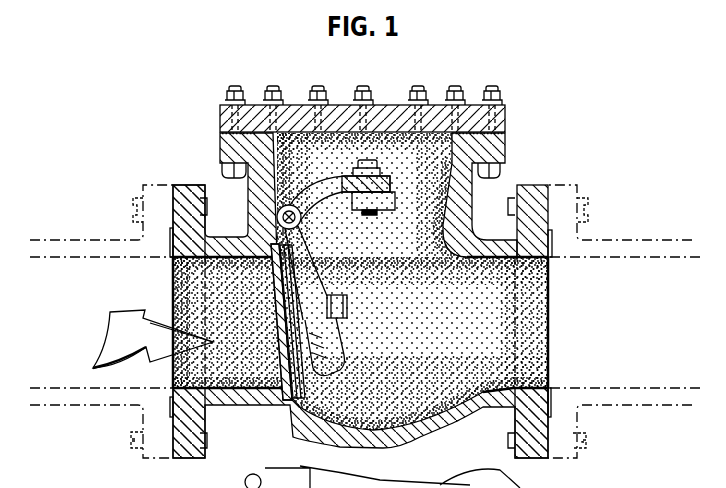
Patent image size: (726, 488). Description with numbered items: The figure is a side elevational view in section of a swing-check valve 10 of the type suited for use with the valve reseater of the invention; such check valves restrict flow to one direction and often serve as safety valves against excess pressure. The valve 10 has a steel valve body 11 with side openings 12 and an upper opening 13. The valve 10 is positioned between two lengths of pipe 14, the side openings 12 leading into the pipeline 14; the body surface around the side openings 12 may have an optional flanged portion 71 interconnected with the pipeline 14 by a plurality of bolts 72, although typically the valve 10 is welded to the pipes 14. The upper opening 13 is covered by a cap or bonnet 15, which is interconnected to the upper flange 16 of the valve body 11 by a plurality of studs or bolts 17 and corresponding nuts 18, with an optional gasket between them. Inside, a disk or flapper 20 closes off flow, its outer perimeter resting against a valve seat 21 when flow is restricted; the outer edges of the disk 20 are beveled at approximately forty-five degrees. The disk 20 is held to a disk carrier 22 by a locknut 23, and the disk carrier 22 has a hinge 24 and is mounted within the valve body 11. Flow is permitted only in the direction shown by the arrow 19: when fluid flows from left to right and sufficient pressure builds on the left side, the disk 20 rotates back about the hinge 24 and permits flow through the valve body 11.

The valve 10 is at (562, 100).
The valve body 11 is at (259, 397).
The side openings 12 is at (173, 284).
The upper opening 13 is at (302, 128).
The pipe 14 is at (90, 240).
The bonnet 15 is at (378, 115).
The upper flange 16 is at (506, 150).
The studs or bolts 17 is at (236, 90).
The nuts 18 is at (224, 100).
The arrow 19 is at (112, 332).
The disk 20 is at (272, 322).
The valve seat 21 is at (268, 240).
The disk carrier 22 is at (318, 218).
The locknut 23 is at (340, 318).
The hinge 24 is at (272, 213).
The flanged portion 71 is at (533, 189).
The bolts 72 is at (137, 200).